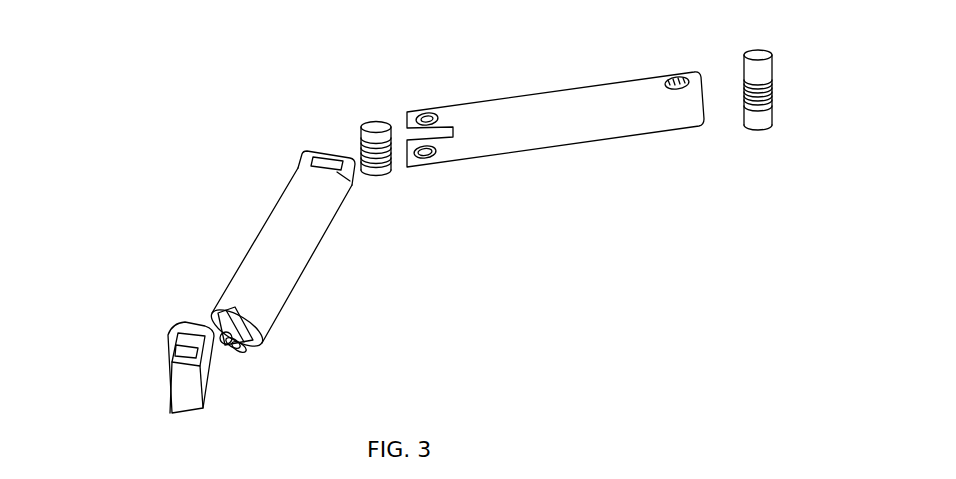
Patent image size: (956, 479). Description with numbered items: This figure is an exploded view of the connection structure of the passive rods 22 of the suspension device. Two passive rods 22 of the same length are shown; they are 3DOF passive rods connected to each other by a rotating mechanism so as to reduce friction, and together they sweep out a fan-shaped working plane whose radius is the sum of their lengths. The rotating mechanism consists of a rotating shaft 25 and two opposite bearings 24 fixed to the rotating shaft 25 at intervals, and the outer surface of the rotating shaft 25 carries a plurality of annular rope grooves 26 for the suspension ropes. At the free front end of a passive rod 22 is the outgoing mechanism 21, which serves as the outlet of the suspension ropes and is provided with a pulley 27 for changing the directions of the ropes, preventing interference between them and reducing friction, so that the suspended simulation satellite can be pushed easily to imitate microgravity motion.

The outgoing mechanism 21 is at (183, 350).
The passive rod 22 is at (268, 255).
The bearing 24 is at (362, 135).
The rotating shaft 25 is at (378, 128).
The rope groove 26 is at (773, 92).
The pulley 27 is at (224, 349).